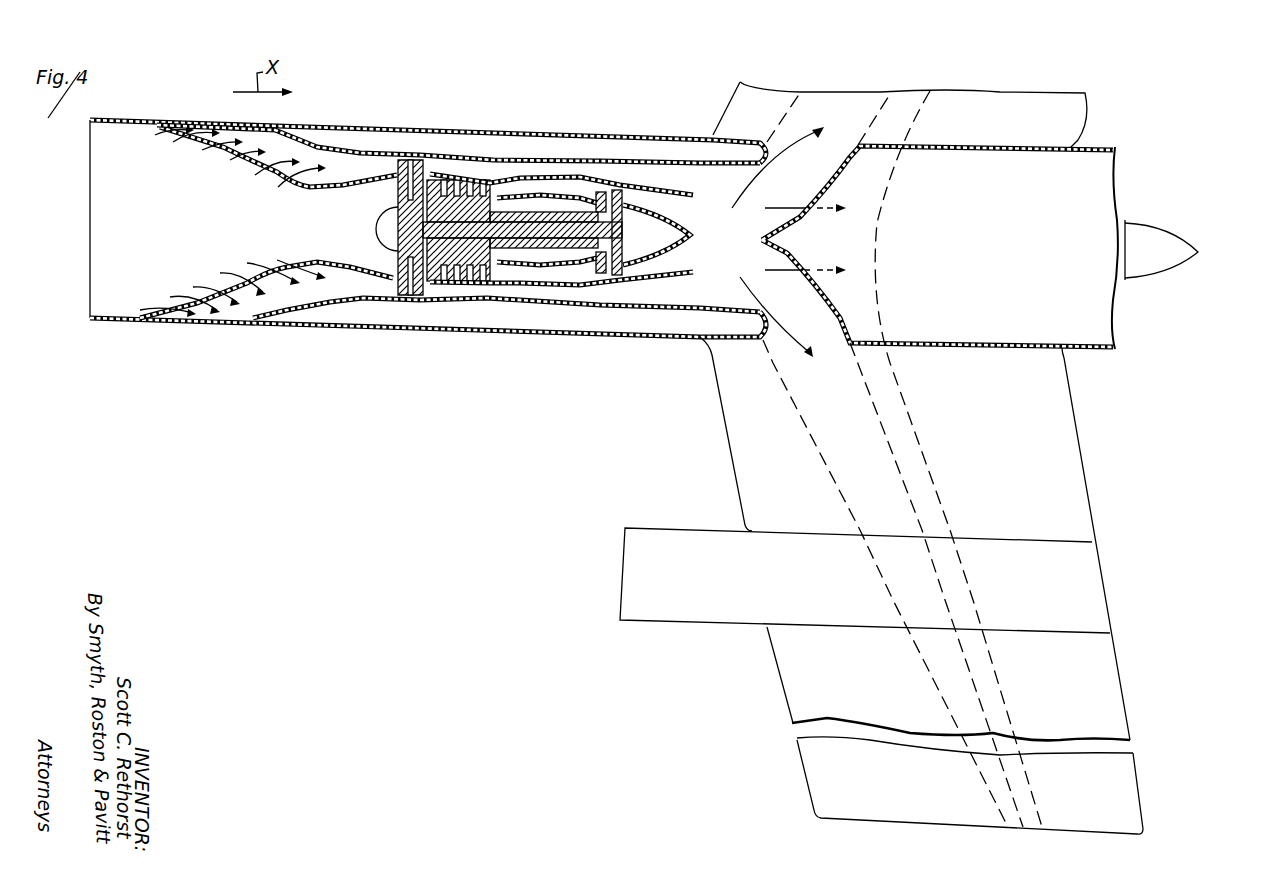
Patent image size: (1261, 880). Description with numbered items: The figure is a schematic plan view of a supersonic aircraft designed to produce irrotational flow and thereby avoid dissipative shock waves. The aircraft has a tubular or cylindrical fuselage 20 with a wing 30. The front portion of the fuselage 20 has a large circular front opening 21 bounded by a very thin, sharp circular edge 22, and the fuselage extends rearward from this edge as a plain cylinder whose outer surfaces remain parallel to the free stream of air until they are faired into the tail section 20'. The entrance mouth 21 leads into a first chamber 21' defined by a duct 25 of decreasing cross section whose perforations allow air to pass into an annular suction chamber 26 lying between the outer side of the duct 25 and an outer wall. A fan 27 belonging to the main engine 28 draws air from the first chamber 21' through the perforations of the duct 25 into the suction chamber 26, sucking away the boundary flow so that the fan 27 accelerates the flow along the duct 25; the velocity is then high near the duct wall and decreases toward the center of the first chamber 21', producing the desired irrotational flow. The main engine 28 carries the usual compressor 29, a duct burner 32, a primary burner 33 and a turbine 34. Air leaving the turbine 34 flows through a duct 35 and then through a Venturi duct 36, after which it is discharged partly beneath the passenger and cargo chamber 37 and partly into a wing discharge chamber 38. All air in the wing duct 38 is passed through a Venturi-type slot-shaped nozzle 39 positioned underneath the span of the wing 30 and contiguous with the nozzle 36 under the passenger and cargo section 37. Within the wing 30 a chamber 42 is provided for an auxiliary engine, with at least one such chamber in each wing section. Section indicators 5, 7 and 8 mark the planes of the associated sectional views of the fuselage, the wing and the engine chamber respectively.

The section line 5- 5 is at (150, 222).
The section line 7- 7 is at (760, 445).
The section line 8- 8 is at (663, 577).
The fuselage 20 is at (588, 122).
The tail section 20' is at (1161, 262).
The front opening 21 is at (69, 219).
The first chamber 21' is at (206, 228).
The circular edge 22 is at (87, 318).
The duct 25 is at (254, 160).
The annular suction chamber 26 is at (285, 298).
The fan 27 is at (415, 165).
The main engine 28 is at (540, 248).
The compressor 29 is at (477, 190).
The wing 30 is at (737, 370).
The duct burner 32 is at (548, 167).
The primary burner 33 is at (533, 192).
The turbine 34 is at (655, 197).
The duct 35 is at (748, 256).
The Venturi duct 36 is at (855, 286).
The passenger and cargo chamber 37 is at (976, 259).
The wing discharge chamber 38 is at (868, 500).
The slot-shaped nozzle 39 is at (917, 492).
The chamber 42 is at (717, 610).